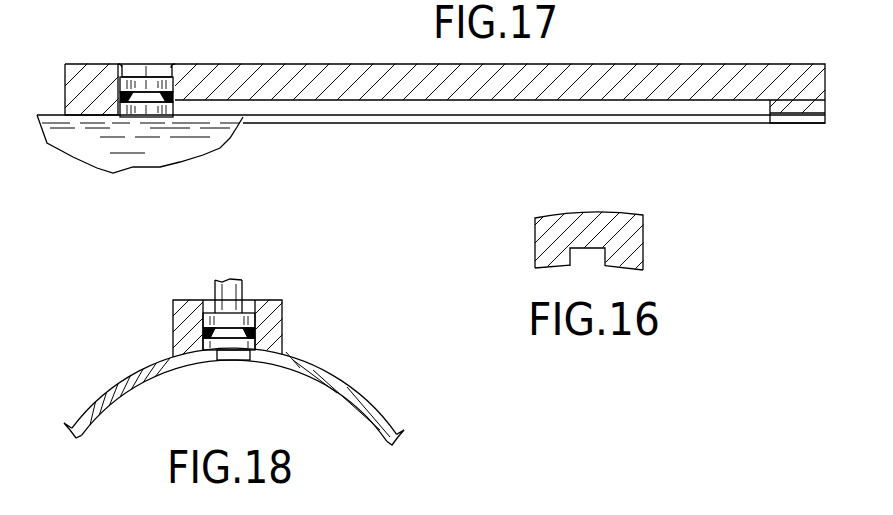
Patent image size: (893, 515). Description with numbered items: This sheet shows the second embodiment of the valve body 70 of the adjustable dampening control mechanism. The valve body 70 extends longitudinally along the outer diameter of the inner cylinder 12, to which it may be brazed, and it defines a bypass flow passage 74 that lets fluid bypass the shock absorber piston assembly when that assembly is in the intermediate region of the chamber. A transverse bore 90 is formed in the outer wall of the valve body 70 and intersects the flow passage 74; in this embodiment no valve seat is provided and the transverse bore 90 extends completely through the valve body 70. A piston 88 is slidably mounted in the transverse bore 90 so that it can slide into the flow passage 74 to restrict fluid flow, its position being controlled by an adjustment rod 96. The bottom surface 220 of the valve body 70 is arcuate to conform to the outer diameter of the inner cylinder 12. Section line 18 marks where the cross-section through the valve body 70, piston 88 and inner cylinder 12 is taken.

In FIG. 17, the inner cylinder 12 is at (103, 145).
In FIG. 18, the inner cylinder 12 is at (333, 382).
In FIG. 17, the section line 18— 18 is at (110, 27).
In FIG. 17, the valve body 70 is at (551, 64).
In FIG. 16, the valve body 70 is at (630, 216).
In FIG. 17, the bypass flow passage 74 is at (583, 107).
In FIG. 18, the bypass flow passage 74 is at (257, 320).
In FIG. 17, the piston 88 is at (150, 82).
In FIG. 17, the transverse bore 90 is at (123, 63).
In FIG. 18, the transverse bore 90 is at (247, 296).
In FIG. 18, the adjustment rod 96 is at (193, 300).
In FIG. 16, the bottom surface 220 is at (627, 269).